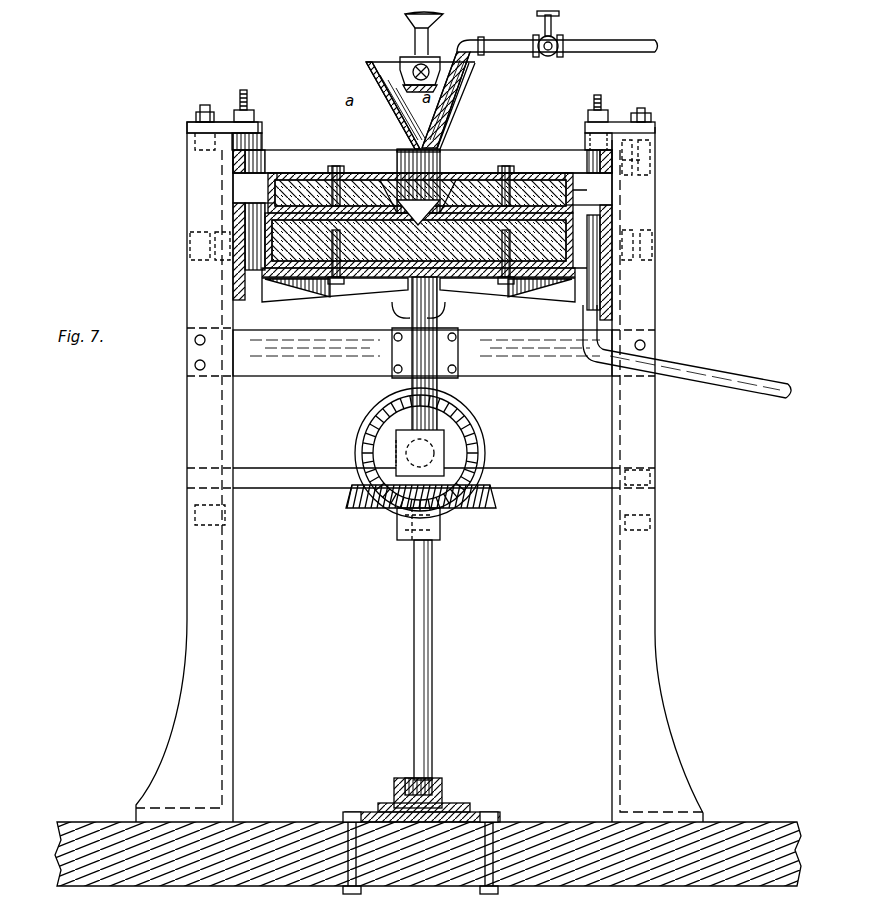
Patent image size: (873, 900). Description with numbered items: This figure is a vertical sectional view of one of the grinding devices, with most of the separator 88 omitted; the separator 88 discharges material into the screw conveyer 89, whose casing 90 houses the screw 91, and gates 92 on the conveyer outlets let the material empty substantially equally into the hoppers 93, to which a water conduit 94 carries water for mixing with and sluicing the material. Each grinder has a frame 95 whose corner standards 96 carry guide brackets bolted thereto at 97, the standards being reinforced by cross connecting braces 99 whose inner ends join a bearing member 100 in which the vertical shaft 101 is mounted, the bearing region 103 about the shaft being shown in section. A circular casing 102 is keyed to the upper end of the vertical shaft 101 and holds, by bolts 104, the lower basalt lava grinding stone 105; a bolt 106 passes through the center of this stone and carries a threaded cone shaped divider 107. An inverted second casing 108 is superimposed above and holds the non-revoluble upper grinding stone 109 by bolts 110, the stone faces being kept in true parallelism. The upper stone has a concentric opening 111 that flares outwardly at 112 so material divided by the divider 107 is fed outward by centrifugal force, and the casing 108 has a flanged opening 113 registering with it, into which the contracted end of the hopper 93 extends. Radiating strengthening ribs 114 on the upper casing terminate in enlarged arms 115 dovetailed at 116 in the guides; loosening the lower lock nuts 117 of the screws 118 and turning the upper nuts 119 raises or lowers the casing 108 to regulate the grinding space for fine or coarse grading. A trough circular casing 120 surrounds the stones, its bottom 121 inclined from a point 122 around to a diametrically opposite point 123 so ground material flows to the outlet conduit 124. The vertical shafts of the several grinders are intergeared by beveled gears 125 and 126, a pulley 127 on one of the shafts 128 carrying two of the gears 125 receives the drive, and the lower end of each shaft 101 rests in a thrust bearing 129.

The separator 88 is at (440, 22).
The screw conveyer 89 is at (405, 60).
The casing 90 is at (398, 60).
The screw 91 is at (457, 50).
The gates 92 is at (418, 92).
The hoppers 93 is at (452, 97).
The water conduit 94 is at (460, 75).
The frame 95 is at (655, 608).
The standards 96 is at (195, 520).
The bolts 97 is at (640, 243).
The cross connecting braces 99 is at (300, 376).
The bearing member 100 is at (438, 385).
The vertical shaft 101 is at (432, 608).
The circular casing 102 is at (395, 285).
The bearing 103 is at (458, 347).
The bolts 104 is at (345, 277).
The lower grinding stone 105 is at (568, 240).
The bolt 106 is at (440, 190).
The cone shaped divider 107 is at (395, 185).
The second casing 108 is at (545, 160).
The upper grinding stone 109 is at (300, 173).
The bolts 110 is at (330, 180).
The concentric opening 111 is at (460, 173).
The flared lower end 112 is at (337, 166).
The flanged opening 113 is at (398, 160).
The radiating strengthening ribs 114 is at (558, 150).
The enlarged arms 115 is at (612, 172).
The dovetail 116 is at (645, 160).
The lower lock nuts 117 is at (262, 130).
The screws 118 is at (248, 97).
The upper nuts 119 is at (250, 113).
The trough circular casing 120 is at (612, 268).
The inclined bottom 121 is at (492, 300).
The high point 122 is at (240, 268).
The diametrically opposite point 123 is at (612, 318).
The outlet conduit 124 is at (640, 350).
The beveled gears 125 is at (405, 425).
The beveled gears 126 is at (375, 515).
The pulley 127 is at (486, 445).
The shafts 128 is at (445, 418).
The thrust bearing 129 is at (445, 795).